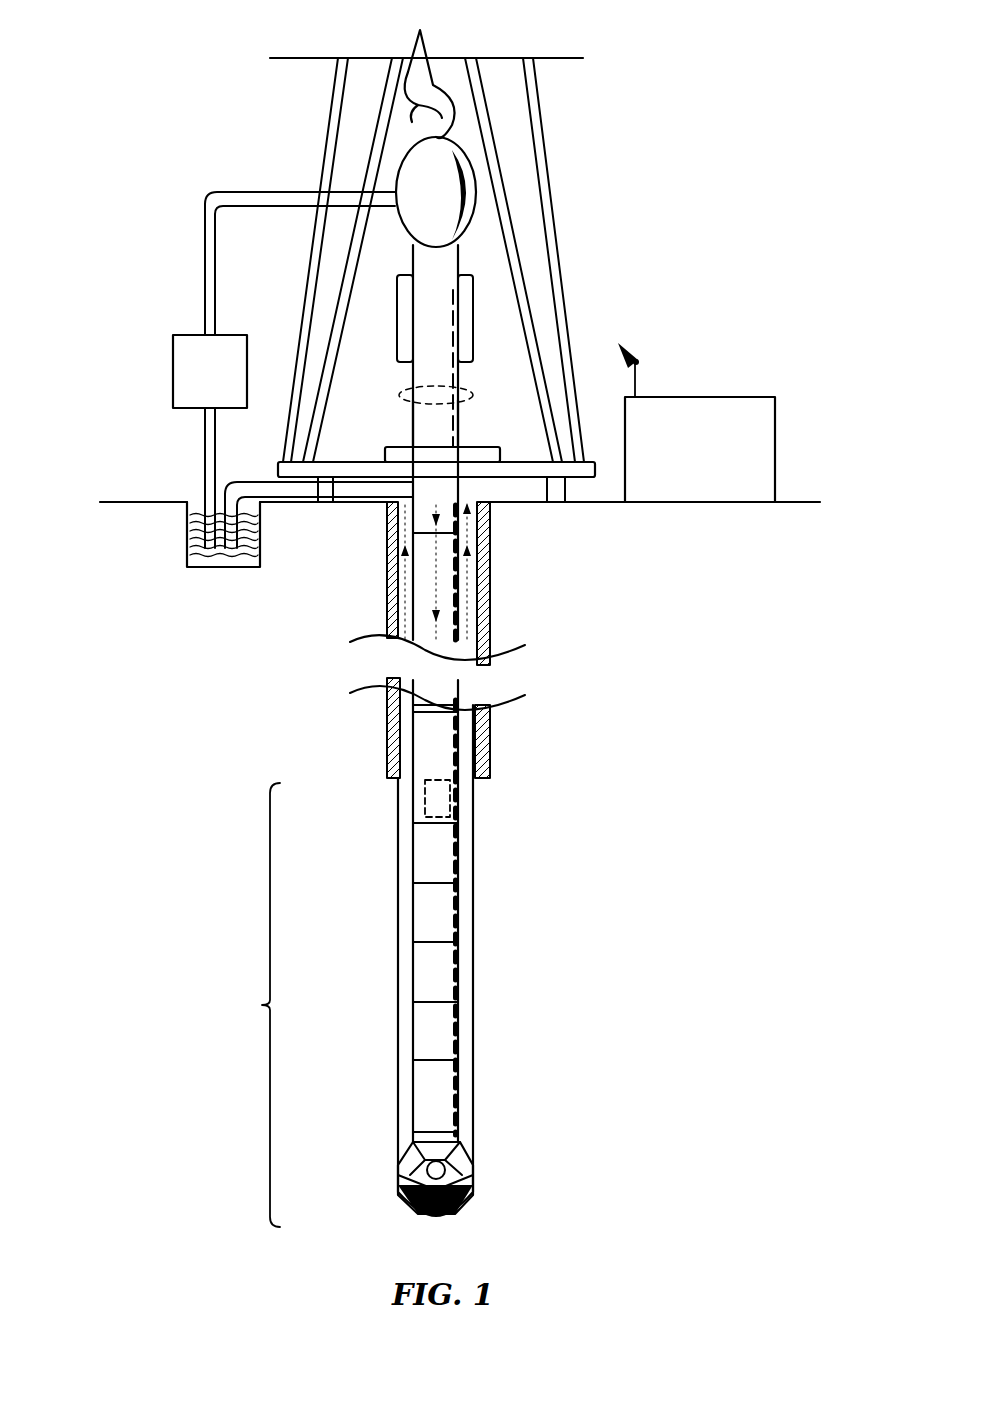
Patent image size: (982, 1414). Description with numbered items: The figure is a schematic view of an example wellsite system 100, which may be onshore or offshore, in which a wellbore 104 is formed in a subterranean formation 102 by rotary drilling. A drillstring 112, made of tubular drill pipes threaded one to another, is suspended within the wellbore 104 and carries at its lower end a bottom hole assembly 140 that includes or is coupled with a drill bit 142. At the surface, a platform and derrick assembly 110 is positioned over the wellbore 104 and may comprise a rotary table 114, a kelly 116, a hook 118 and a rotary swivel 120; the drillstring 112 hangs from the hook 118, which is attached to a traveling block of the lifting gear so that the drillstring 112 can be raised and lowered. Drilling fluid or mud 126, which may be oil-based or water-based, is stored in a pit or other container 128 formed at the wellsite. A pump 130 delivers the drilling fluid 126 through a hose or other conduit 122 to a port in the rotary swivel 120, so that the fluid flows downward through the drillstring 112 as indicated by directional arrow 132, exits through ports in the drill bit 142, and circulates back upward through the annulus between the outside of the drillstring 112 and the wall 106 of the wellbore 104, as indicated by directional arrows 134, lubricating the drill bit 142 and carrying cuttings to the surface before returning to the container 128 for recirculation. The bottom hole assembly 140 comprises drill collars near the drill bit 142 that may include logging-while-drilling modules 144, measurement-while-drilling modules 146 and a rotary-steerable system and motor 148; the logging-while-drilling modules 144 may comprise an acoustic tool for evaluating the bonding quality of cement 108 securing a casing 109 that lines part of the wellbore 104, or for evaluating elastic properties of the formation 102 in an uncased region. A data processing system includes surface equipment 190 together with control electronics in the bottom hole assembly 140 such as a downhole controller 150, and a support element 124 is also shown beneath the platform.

The wellsite system 100 is at (207, 125).
The subterranean formation 102 is at (378, 790).
The wellbore 104 is at (470, 505).
The wall of the wellbore 106 is at (465, 838).
The cement 108 is at (387, 733).
The casing 109 is at (481, 762).
The platform and derrick assembly 110 is at (566, 152).
The drillstring 112 is at (392, 450).
The rotary table 114 is at (480, 447).
The kelly 116 is at (412, 422).
The hook 118 is at (405, 77).
The rotary swivel 120 is at (407, 218).
The hose or other conduit 122 is at (205, 283).
The platform support 124 is at (600, 468).
The drilling fluid or mud 126 is at (222, 560).
The pit or other container 128 is at (200, 503).
The pump 130 is at (192, 410).
The directional arrow 132 is at (437, 595).
The directional arrows 134 is at (403, 572).
The bottom hole assembly 140 is at (262, 1005).
The drill bit 142 is at (410, 1183).
The logging-while-drilling module 144 is at (423, 866).
The measurement-while-drilling module 146 is at (423, 972).
The rotary-steerable system and motor 148 is at (423, 1092).
The downhole controller 150 is at (447, 805).
The surface equipment 190 is at (700, 396).